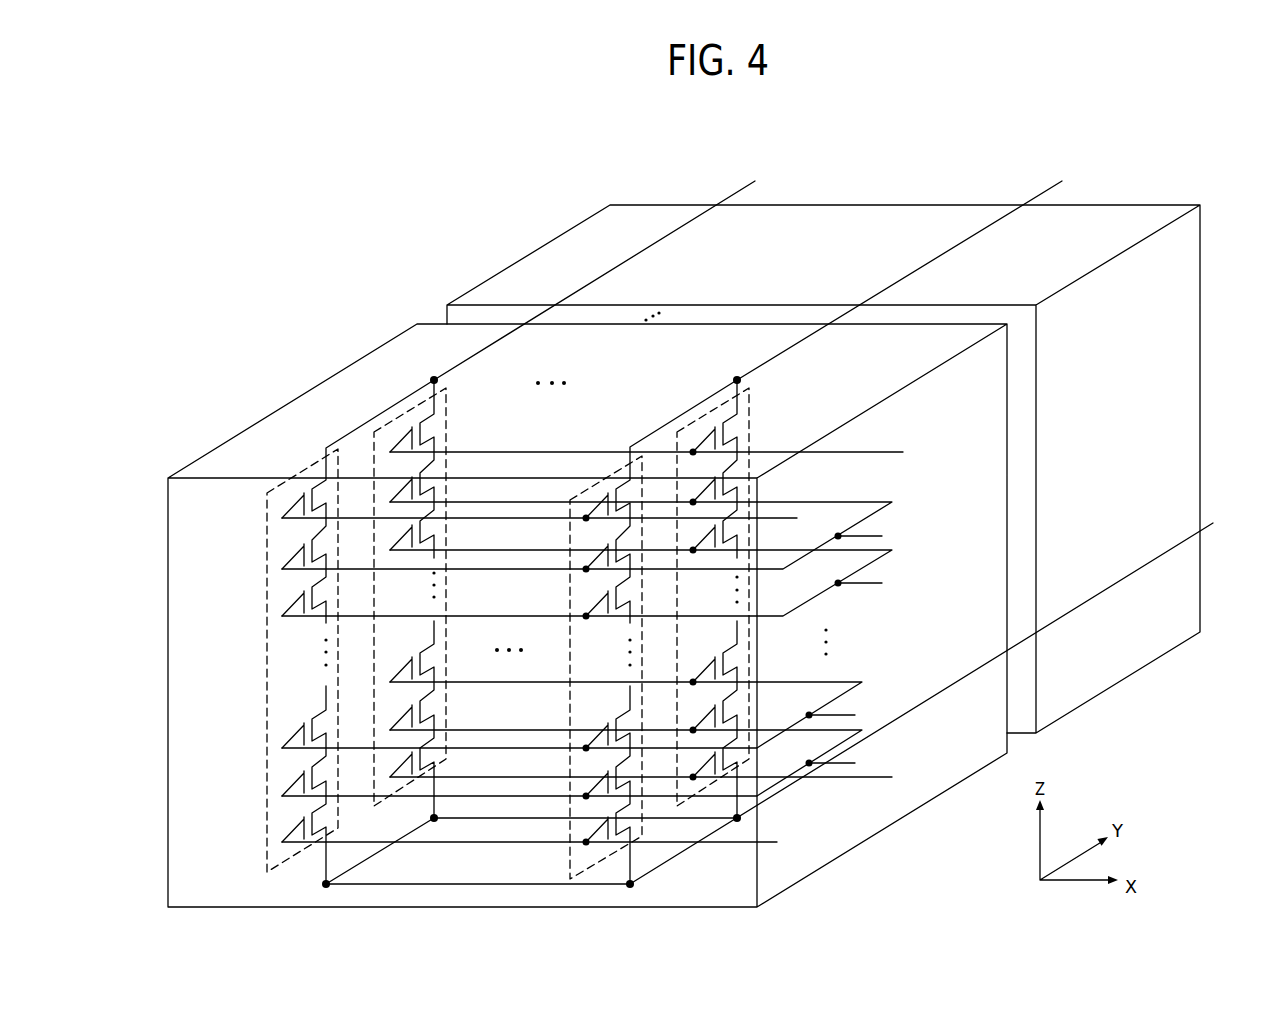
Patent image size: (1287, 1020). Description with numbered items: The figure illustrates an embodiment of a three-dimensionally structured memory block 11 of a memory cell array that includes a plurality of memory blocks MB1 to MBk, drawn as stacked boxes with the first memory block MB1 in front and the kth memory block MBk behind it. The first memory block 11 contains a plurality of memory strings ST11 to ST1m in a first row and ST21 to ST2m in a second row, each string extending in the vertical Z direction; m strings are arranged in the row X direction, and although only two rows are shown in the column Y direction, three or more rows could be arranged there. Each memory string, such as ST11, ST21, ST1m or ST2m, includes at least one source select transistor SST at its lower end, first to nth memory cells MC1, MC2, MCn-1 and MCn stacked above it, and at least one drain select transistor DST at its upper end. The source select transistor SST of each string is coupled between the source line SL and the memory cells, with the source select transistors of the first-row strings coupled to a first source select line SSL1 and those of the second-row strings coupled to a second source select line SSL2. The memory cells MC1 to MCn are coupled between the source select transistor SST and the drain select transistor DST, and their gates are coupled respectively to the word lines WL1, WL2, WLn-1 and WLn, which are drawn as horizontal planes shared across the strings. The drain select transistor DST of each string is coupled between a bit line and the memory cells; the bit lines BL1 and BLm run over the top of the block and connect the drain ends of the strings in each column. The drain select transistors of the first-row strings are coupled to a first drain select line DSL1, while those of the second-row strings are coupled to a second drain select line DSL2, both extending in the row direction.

The memory block 11 is at (1142, 173).
The first memory block MB1 is at (315, 387).
The kth memory block MBk is at (530, 254).
The first bit line BL1 is at (600, 272).
The mth bit line BLm is at (904, 272).
The memory string ST11 is at (304, 471).
The memory string ST21 is at (412, 410).
The memory string ST1m is at (607, 475).
The memory string ST2m is at (716, 409).
The drain select transistor DST is at (288, 504).
The nth memory cell MCn is at (288, 554).
The (n-1)th memory cell MCn-1 is at (288, 602).
The second memory cell MC2 is at (288, 735).
The first memory cell MC1 is at (288, 783).
The source select transistor SST is at (288, 830).
The first drain select line DSL1 is at (560, 519).
The second drain select line DSL2 is at (667, 453).
The nth word line WLn is at (602, 535).
The (n-1)th word line WLn-1 is at (619, 583).
The second word line WL2 is at (586, 715).
The first word line WL1 is at (584, 763).
The first source select line SSL1 is at (548, 844).
The second source select line SSL2 is at (662, 778).
The source line SL is at (780, 700).